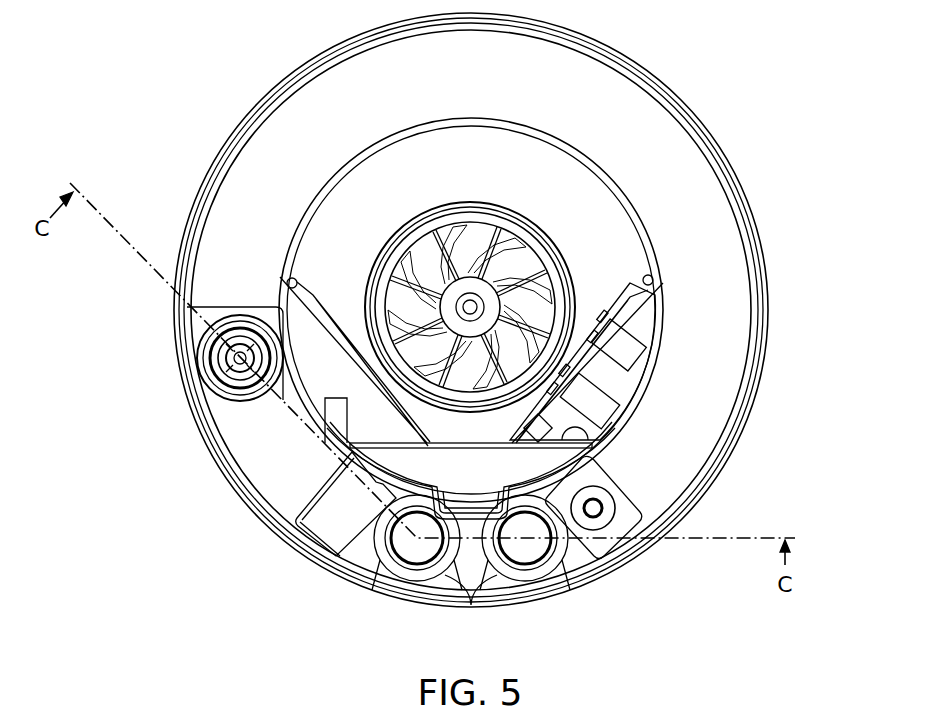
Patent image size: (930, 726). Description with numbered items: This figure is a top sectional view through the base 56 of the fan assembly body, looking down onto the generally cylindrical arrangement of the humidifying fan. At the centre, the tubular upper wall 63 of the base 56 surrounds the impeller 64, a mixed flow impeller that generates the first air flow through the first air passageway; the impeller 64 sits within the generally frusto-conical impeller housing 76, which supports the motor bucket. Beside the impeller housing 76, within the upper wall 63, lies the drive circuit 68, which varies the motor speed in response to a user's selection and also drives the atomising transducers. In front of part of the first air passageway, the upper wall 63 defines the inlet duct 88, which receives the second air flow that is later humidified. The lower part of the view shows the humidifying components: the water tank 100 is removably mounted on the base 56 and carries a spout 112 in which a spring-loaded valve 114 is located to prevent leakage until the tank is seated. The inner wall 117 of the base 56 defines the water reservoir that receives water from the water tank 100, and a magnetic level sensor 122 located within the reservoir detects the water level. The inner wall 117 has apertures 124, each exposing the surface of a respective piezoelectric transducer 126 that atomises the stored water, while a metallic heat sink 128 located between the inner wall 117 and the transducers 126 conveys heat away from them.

The base 56 is at (722, 131).
The upper wall 63 is at (516, 124).
The impeller 64 is at (497, 240).
The impeller housing 76 is at (555, 236).
The drive circuit 68 is at (632, 376).
The inlet duct 88 is at (465, 505).
The water tank 100 is at (312, 500).
The spout 112 is at (234, 328).
The valve 114 is at (205, 372).
The inner wall 117 is at (327, 528).
The magnetic level sensor 122 is at (608, 472).
The apertures 124 is at (464, 574).
The piezoelectric transducer 126 is at (412, 553).
The heat sink 128 is at (393, 548).